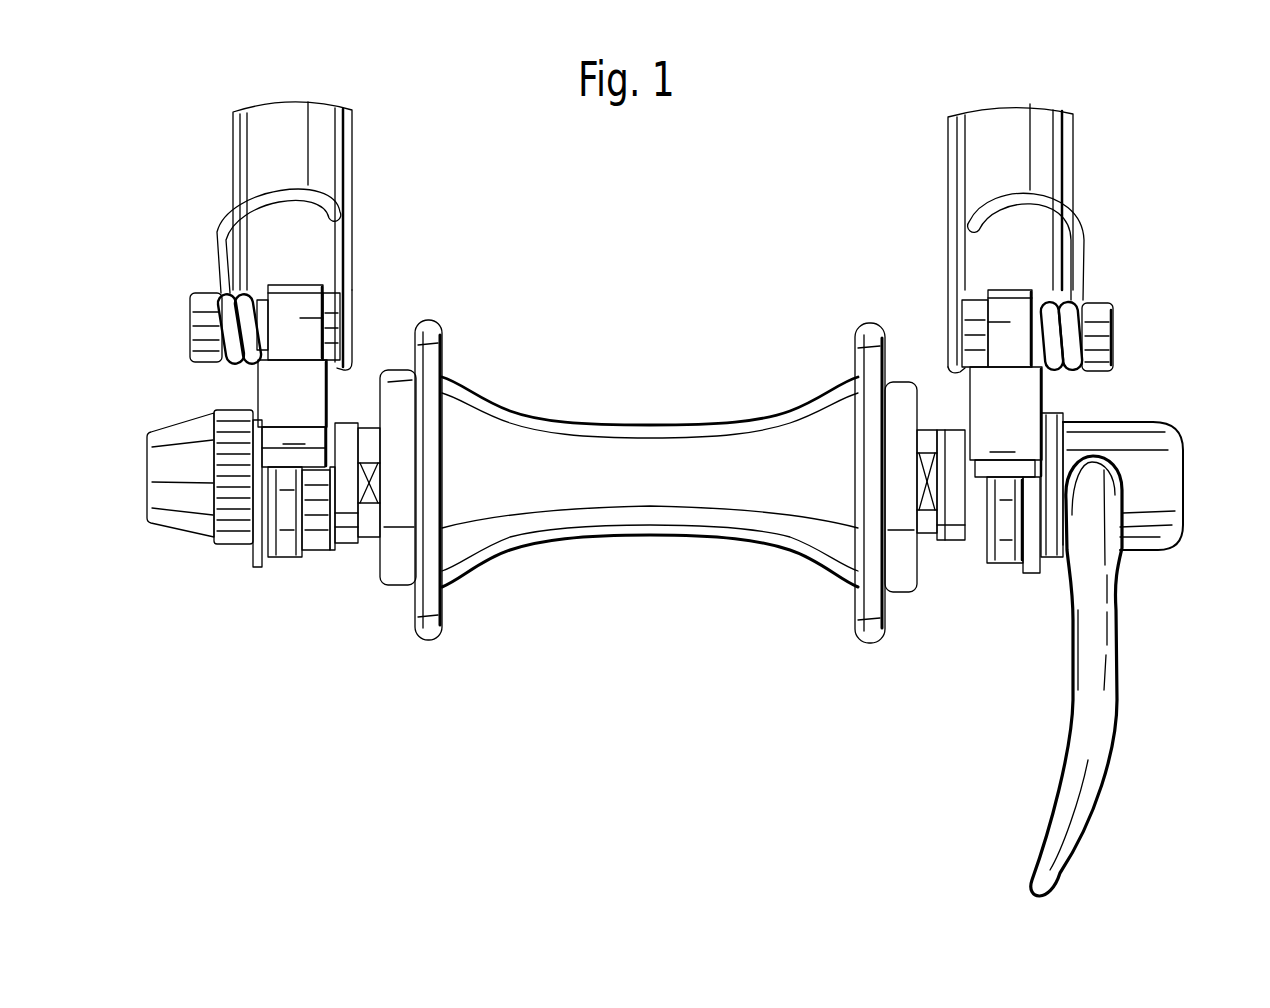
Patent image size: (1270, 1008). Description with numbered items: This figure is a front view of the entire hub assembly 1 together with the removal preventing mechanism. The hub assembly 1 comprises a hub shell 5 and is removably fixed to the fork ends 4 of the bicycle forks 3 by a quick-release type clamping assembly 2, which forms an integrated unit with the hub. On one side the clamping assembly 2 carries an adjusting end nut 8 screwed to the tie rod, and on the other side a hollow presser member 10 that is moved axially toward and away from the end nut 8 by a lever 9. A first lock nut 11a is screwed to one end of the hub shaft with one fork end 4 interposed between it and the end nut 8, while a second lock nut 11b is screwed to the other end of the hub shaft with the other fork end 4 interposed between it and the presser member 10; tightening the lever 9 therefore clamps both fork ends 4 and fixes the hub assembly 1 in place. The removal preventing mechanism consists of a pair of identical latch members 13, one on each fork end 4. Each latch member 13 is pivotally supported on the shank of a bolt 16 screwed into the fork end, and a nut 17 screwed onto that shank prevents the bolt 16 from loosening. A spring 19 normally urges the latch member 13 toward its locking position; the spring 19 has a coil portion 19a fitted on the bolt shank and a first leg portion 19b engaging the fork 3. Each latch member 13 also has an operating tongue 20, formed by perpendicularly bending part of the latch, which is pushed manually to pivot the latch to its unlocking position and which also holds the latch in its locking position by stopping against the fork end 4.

The hub assembly 1 is at (590, 402).
The quick-release type clamping assembly 2 is at (1162, 413).
The fork 3 is at (233, 160).
The fork end 4 is at (290, 560).
The hub shell 5 is at (500, 402).
The adjusting end nut 8 is at (170, 425).
The lever 9 is at (1118, 652).
The presser member 10 is at (1185, 443).
The first lock nut 11a is at (340, 545).
The second lock nut 11b is at (950, 545).
The latch member 13 is at (257, 568).
The bolt 16 is at (190, 320).
The nut 17 is at (330, 292).
The spring 19 is at (1075, 218).
The coil portion 19a is at (227, 292).
The first leg portion 19b is at (322, 198).
The operating tongue 20 is at (313, 387).